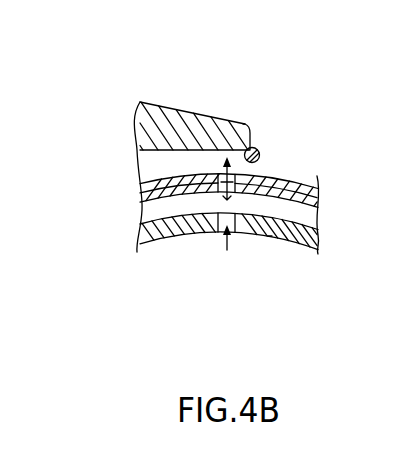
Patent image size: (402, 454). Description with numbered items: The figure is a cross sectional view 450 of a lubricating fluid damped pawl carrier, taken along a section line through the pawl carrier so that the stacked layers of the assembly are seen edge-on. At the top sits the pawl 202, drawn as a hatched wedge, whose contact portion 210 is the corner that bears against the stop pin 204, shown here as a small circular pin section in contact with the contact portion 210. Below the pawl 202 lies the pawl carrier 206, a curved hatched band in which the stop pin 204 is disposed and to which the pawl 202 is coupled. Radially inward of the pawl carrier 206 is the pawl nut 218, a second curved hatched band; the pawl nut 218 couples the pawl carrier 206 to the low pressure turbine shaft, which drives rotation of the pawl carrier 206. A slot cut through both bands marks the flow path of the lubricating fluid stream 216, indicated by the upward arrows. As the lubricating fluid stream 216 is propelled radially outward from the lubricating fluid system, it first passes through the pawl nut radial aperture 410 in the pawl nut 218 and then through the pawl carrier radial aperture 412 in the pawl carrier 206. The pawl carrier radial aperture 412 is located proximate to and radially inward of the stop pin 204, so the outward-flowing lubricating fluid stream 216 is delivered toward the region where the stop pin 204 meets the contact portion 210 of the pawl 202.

The cross sectional view 450 is at (87, 61).
The pawl 202 is at (207, 108).
The contact portion 210 is at (245, 126).
The stop pin 204 is at (260, 155).
The pawl carrier 206 is at (148, 193).
The pawl carrier radial aperture 412 is at (300, 190).
The pawl nut 218 is at (140, 232).
The lubricating fluid stream 216 is at (222, 165).
The pawl nut radial aperture 410 is at (270, 233).